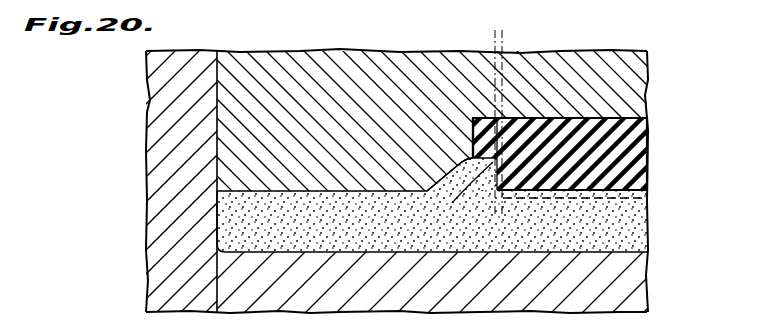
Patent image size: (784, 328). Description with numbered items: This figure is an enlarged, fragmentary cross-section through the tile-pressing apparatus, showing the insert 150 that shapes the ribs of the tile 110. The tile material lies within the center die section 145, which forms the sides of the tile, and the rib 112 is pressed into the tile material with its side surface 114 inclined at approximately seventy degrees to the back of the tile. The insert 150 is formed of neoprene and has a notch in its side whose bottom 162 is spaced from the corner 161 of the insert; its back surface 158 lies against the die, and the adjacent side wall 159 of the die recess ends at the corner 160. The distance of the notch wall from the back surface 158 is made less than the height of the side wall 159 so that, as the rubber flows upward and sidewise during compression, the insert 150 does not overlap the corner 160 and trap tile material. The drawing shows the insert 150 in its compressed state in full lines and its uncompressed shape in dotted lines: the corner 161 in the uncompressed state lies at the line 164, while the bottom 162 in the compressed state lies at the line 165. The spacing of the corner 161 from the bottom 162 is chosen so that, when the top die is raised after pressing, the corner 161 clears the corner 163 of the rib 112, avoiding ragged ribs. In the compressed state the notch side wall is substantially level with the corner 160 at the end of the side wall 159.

The tile 110 is at (632, 213).
The rib 112 is at (462, 160).
The side surface 114 is at (492, 196).
The center die section 145 is at (158, 150).
The insert 150 is at (647, 133).
The back surface 158 is at (617, 117).
The side wall 159 is at (473, 132).
The corner 160 is at (473, 153).
The corner 161 is at (505, 200).
The bottom 162 is at (530, 118).
The corner 163 is at (457, 190).
The line 164 is at (503, 45).
The line 165 is at (494, 45).